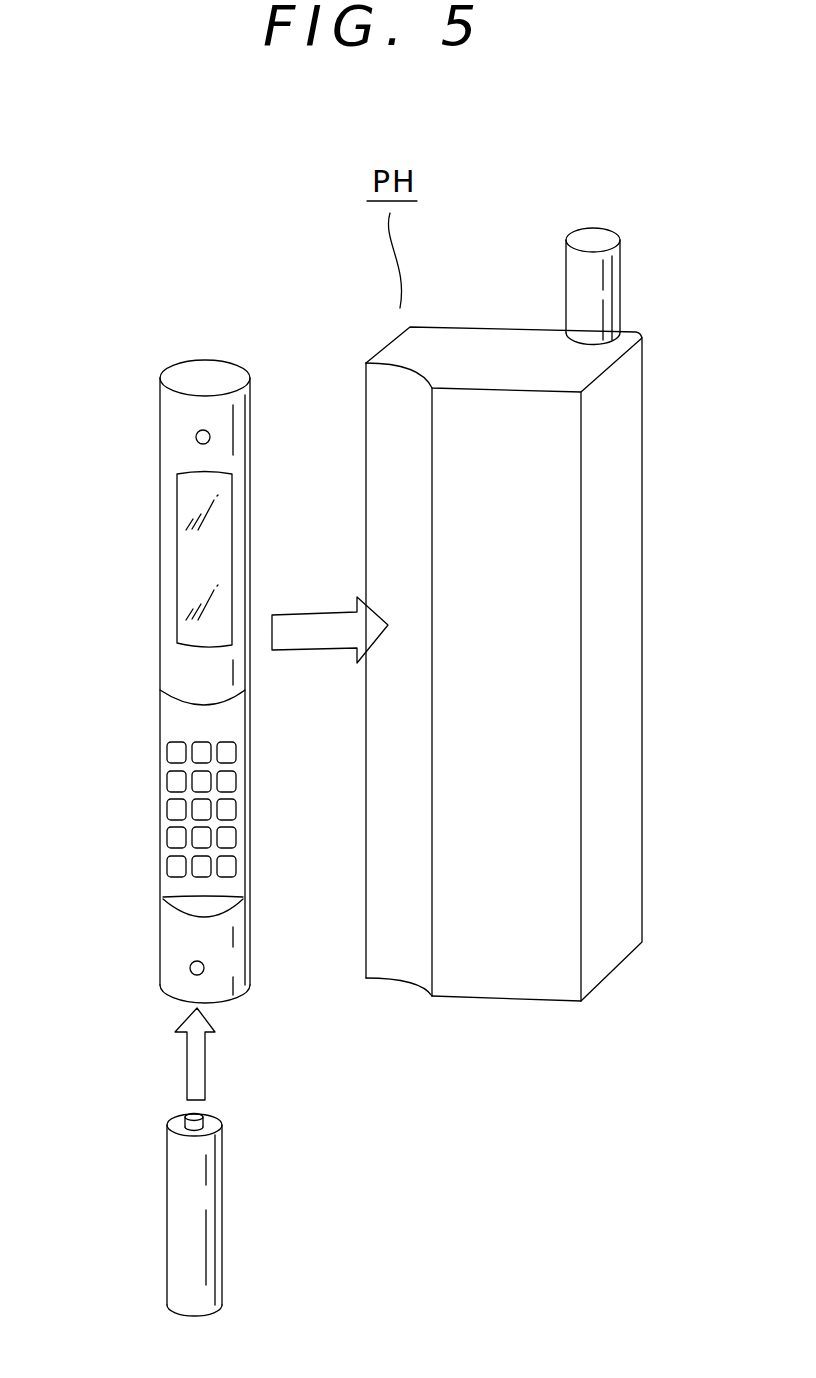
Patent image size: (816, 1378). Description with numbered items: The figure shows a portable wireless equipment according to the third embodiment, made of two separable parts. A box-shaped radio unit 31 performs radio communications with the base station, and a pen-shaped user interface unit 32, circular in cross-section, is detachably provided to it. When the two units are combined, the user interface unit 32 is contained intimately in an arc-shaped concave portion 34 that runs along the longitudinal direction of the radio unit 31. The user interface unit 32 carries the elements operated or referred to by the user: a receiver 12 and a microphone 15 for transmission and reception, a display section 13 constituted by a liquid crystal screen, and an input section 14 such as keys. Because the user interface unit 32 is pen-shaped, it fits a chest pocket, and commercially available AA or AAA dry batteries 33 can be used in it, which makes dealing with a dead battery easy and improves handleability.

The receiver 12 is at (210, 432).
The display section 13 is at (185, 591).
The input section 14 is at (163, 800).
The microphone 15 is at (190, 967).
The radio unit 31 is at (572, 616).
The user interface unit 32 is at (183, 452).
The dry battery 33 is at (212, 1197).
The arc-shaped concave portion 34 is at (390, 968).